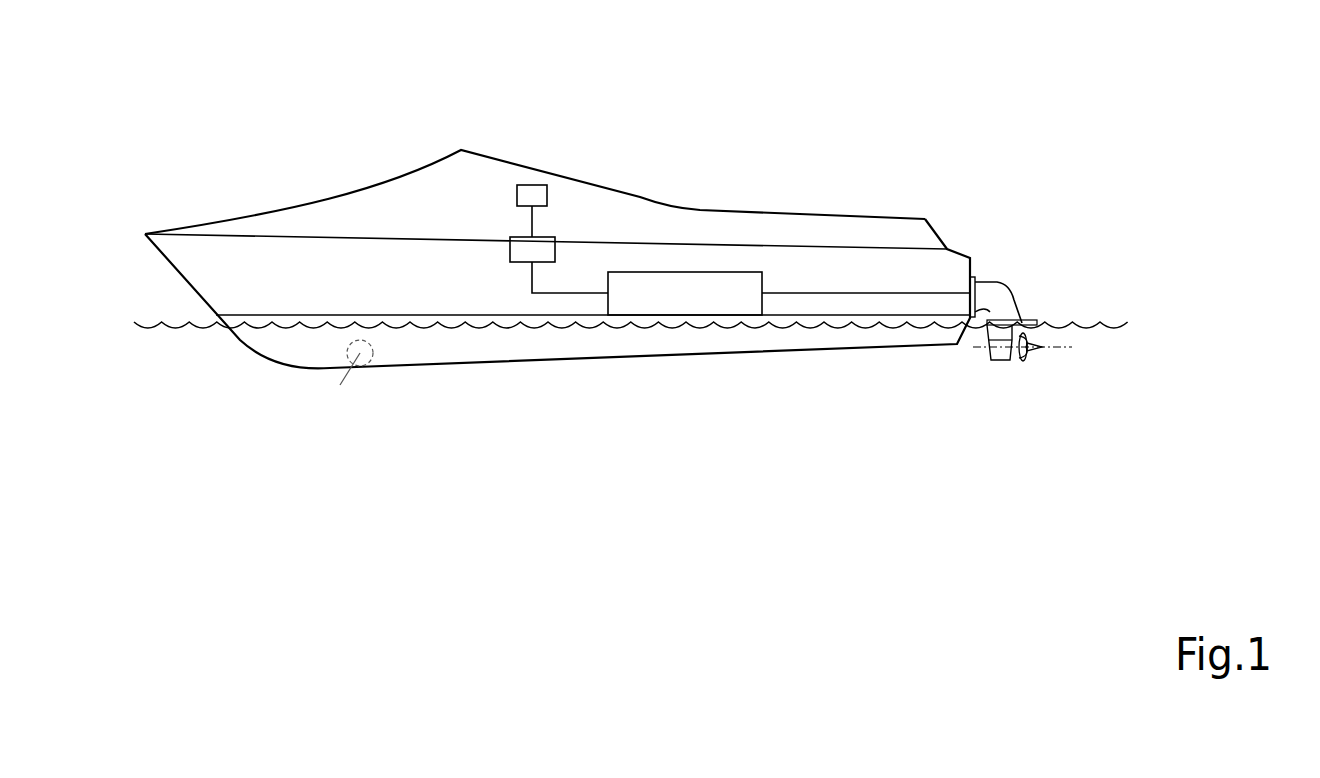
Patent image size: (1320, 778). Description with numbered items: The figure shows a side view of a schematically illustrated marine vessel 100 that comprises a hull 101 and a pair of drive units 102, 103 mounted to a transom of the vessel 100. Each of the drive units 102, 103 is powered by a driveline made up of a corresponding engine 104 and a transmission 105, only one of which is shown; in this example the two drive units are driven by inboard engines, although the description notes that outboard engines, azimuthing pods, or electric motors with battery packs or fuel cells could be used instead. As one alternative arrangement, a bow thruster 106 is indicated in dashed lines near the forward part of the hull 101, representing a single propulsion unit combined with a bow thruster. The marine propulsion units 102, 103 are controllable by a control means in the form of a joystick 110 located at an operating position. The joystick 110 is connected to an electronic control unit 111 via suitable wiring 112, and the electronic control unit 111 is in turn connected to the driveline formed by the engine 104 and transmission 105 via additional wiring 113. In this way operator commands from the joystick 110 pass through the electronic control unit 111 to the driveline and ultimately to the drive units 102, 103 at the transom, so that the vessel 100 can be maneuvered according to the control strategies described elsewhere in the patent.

The marine vessel 100 is at (903, 210).
The joystick 110 is at (567, 160).
The hull 101 is at (375, 290).
The drive unit 102 is at (998, 270).
The drive unit 103 is at (1032, 300).
The engine 104 is at (682, 295).
The transmission 105 is at (847, 302).
The bow thruster 106 is at (339, 383).
The electronic control unit (ECU) 111 is at (513, 262).
The wiring 112 is at (531, 228).
The additional wiring 113 is at (558, 297).